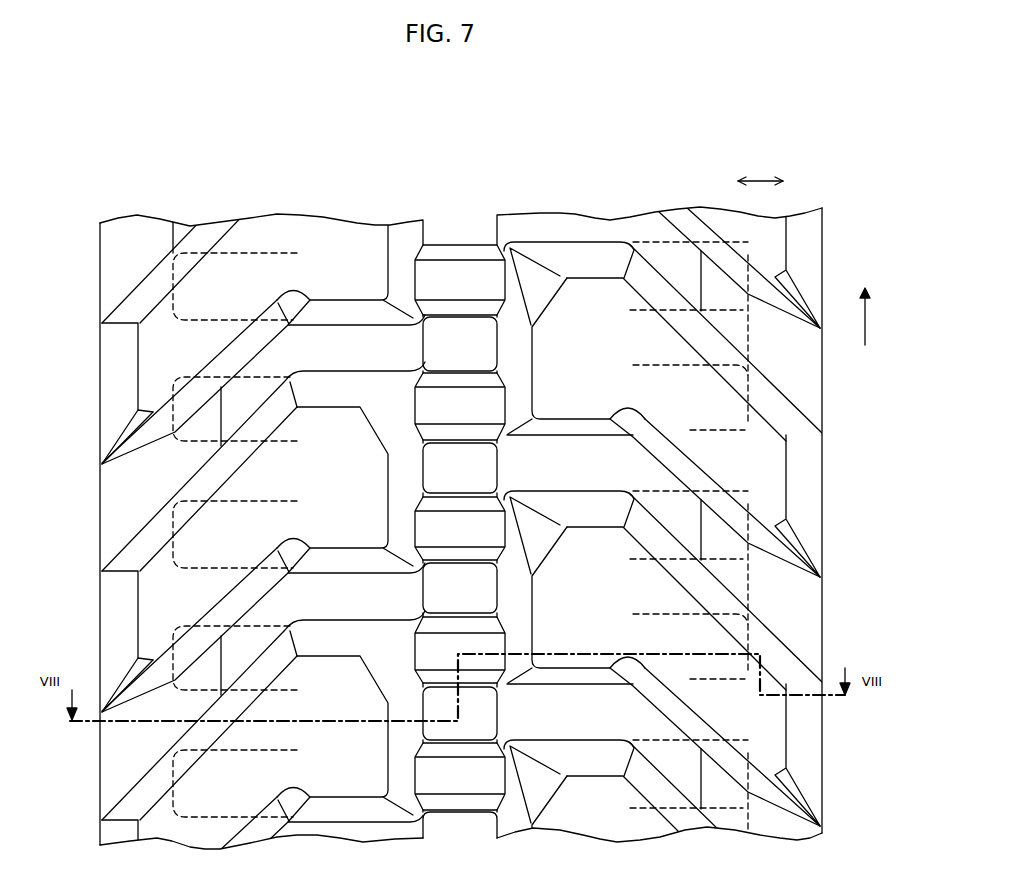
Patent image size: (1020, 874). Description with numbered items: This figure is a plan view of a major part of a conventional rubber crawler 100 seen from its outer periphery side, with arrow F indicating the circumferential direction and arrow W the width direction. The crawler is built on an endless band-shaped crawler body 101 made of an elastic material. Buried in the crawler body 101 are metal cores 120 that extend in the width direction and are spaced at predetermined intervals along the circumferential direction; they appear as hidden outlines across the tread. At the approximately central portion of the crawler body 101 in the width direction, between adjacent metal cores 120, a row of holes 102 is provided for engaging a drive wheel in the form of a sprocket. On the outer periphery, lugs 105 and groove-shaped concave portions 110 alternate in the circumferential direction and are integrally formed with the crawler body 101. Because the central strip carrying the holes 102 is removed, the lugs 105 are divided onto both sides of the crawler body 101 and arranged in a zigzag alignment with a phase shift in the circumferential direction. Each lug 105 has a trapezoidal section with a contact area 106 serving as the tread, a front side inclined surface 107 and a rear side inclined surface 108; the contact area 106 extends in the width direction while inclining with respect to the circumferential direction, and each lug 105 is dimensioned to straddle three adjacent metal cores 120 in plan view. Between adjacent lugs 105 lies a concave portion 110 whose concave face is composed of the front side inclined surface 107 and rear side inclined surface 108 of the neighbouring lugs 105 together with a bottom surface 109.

The rubber crawler 100 is at (845, 212).
The crawler body 101 is at (830, 274).
The holes 102 is at (445, 342).
The lugs 105 is at (155, 357).
The contact area 106 is at (155, 338).
The front side inclined surface 107 is at (143, 531).
The rear side inclined surface 108 is at (145, 294).
The bottom surface 109 is at (102, 462).
The concave portions 110 is at (152, 485).
The metal cores 120 is at (731, 411).